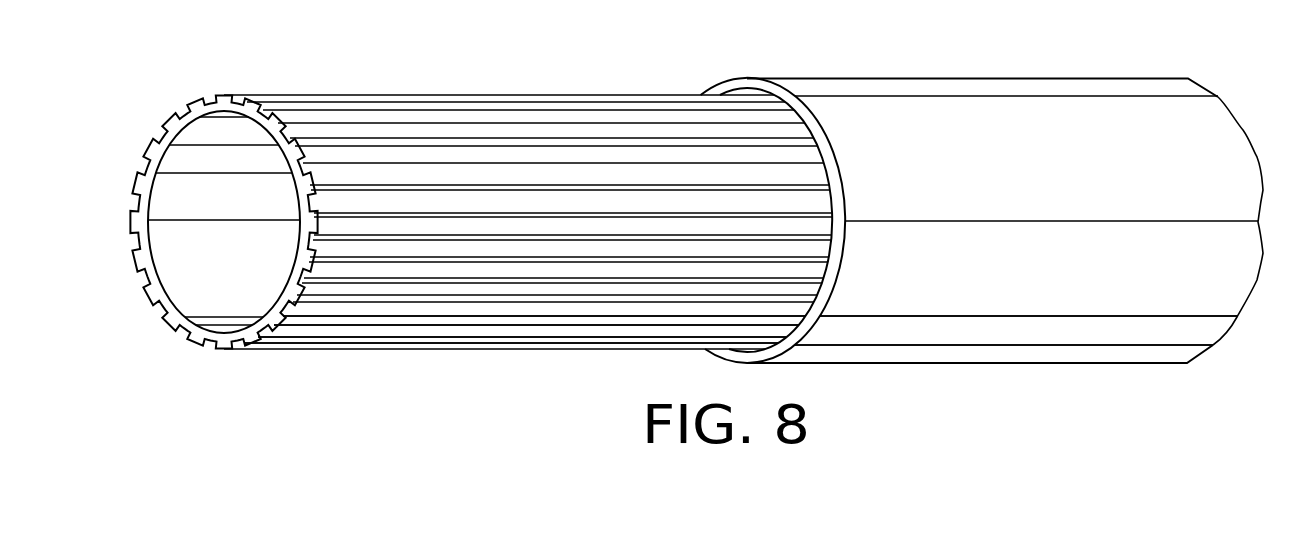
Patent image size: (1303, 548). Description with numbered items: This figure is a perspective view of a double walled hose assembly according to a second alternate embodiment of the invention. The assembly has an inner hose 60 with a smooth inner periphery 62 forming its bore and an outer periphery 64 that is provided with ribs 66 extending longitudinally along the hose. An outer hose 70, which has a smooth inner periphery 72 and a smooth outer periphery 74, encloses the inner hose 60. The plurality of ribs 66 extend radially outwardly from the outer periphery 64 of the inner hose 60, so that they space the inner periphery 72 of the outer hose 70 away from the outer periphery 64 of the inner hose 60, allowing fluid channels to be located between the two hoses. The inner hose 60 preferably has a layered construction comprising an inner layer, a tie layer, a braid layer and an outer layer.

The inner hose 60 is at (264, 78).
The inner periphery 62 is at (180, 158).
The outer periphery 64 is at (197, 105).
The ribs 66 is at (375, 308).
The outer hose 70 is at (1005, 79).
The inner periphery 72 is at (769, 102).
The outer periphery 74 is at (1037, 323).